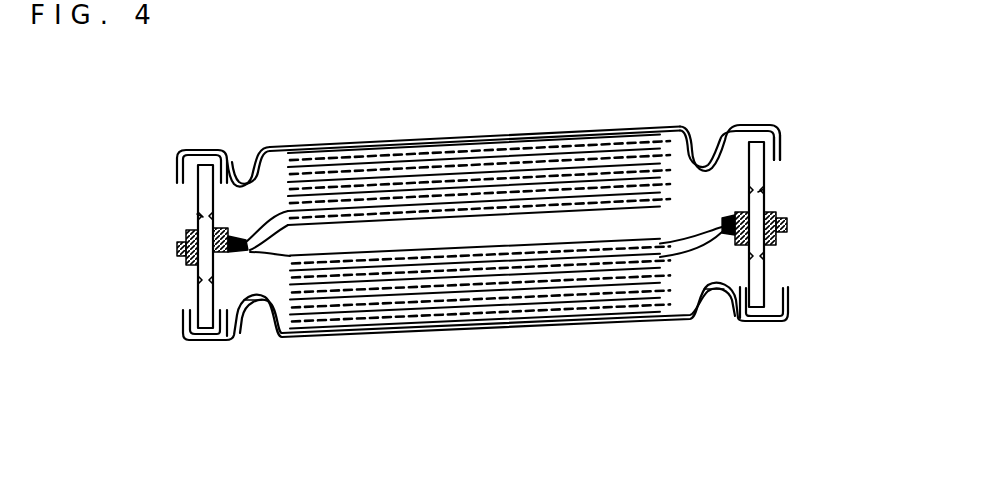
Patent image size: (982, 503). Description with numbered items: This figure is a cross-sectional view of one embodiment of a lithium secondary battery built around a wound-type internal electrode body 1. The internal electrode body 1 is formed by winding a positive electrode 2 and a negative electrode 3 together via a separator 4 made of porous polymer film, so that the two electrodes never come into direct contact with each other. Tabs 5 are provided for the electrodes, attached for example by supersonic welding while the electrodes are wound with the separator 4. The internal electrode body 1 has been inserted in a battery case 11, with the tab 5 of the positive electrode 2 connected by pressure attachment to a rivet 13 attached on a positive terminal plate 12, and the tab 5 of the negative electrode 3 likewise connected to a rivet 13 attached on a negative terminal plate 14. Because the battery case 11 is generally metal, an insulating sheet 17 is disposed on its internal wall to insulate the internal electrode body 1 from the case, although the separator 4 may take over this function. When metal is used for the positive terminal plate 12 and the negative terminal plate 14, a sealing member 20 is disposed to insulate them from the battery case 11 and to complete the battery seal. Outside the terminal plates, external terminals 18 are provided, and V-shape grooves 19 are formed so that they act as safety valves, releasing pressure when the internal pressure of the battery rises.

The wound-type internal electrode body 1 is at (560, 282).
The positive electrode 2 is at (333, 158).
The negative electrode 3 is at (418, 177).
The separator 4 is at (505, 168).
The tab 5 is at (246, 325).
The battery case 11 is at (482, 328).
The positive terminal plate 12 is at (198, 297).
The rivet 13 is at (232, 240).
The negative terminal plate 14 is at (766, 268).
The insulating sheet 17 is at (320, 323).
The external terminal 18 is at (180, 250).
The V-shape groove 19 is at (197, 216).
The sealing member 20 is at (187, 157).